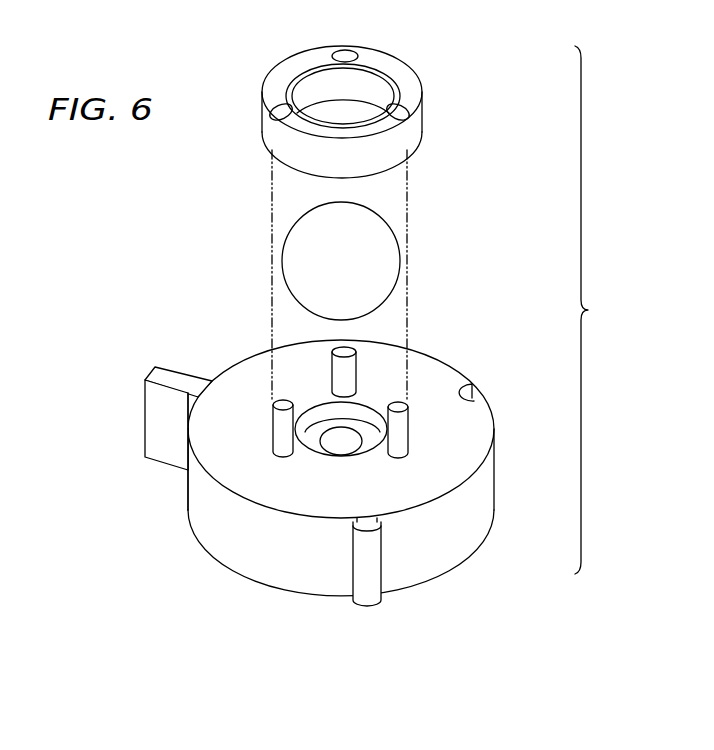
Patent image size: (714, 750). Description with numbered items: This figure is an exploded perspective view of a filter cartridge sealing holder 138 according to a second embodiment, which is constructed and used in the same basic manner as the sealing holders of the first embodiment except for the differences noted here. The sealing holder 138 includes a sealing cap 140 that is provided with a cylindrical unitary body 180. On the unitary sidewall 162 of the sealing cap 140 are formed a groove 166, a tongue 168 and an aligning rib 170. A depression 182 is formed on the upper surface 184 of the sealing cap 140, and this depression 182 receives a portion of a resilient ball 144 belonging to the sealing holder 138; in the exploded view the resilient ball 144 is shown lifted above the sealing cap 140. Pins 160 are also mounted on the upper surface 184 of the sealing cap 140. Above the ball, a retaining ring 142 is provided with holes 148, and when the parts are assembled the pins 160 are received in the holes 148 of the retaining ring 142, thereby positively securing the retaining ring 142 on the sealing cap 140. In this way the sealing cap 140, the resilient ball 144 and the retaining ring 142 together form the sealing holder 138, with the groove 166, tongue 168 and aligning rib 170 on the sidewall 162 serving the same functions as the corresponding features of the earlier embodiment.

The sealing holder 138 is at (600, 310).
The sealing cap 140 is at (200, 572).
The retaining ring 142 is at (368, 50).
The resilient ball 144 is at (383, 250).
The holes 148 is at (345, 52).
The pins 160 is at (340, 363).
The unitary sidewall 162 is at (482, 507).
The groove 166 is at (475, 392).
The tongue 168 is at (365, 594).
The aligning rib 170 is at (170, 378).
The cylindrical unitary body 180 is at (280, 606).
The depression 182 is at (372, 437).
The upper surface 184 is at (228, 470).